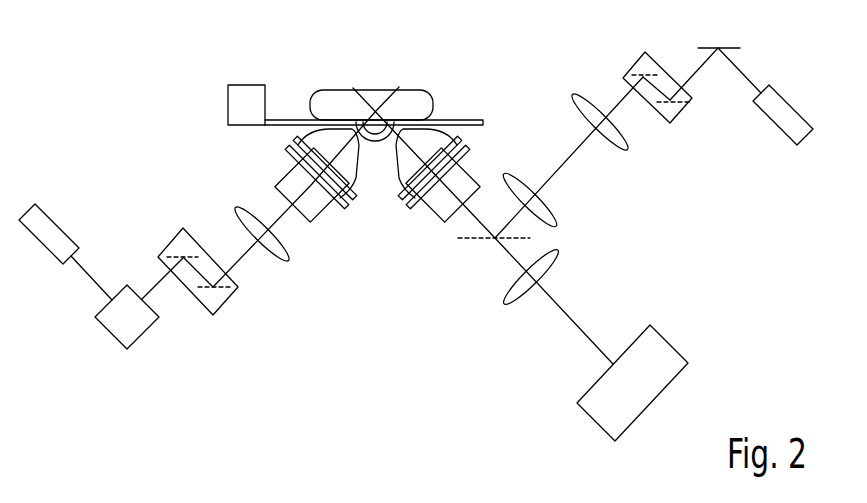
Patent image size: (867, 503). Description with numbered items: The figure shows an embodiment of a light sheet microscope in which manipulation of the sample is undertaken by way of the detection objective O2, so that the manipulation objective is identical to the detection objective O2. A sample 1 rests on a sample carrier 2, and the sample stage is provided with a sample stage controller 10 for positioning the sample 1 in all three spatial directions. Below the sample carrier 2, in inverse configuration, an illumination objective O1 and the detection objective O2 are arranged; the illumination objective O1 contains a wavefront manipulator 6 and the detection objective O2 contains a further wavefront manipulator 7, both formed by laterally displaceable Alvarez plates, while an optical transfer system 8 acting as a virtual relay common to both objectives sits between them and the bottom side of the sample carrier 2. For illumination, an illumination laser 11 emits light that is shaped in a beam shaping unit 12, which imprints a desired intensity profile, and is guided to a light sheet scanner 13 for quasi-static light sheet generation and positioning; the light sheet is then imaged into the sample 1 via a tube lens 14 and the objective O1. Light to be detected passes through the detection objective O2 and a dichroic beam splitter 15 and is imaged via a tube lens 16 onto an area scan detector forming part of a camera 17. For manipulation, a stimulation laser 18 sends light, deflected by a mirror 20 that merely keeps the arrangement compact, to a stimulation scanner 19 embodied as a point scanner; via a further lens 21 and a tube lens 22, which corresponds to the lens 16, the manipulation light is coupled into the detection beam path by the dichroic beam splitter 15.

The sample 1 is at (418, 88).
The sample carrier 2 is at (470, 117).
The wavefront manipulator 6 is at (290, 150).
The further wavefront manipulator 7 is at (467, 153).
The optical transfer system 8 is at (376, 143).
The sample stage controller 10 is at (237, 88).
The illumination laser 11 is at (50, 215).
The beam shaping unit 12 is at (115, 330).
The light sheet scanner 13 is at (183, 228).
The tube lens 14 is at (278, 258).
The dichroic beam splitter 15 is at (470, 240).
The tube lens 16 is at (543, 270).
The camera 17 is at (597, 393).
The stimulation laser 18 is at (775, 122).
The stimulation scanner 19 is at (670, 117).
The mirror 20 is at (742, 48).
The further lens 21 is at (592, 100).
The tube lens 22 is at (557, 217).
The illumination objective O1 is at (313, 213).
The detection objective O2 is at (440, 213).